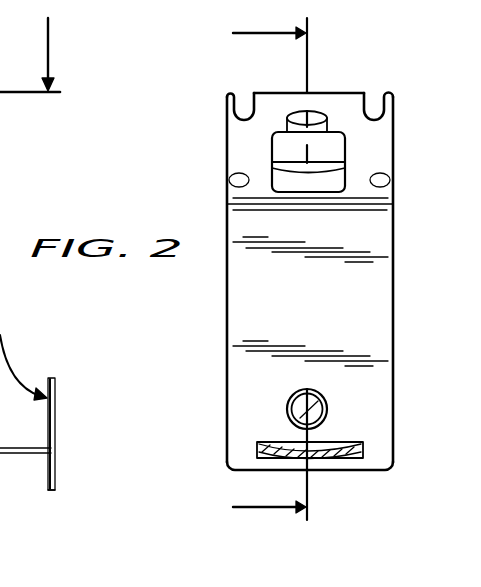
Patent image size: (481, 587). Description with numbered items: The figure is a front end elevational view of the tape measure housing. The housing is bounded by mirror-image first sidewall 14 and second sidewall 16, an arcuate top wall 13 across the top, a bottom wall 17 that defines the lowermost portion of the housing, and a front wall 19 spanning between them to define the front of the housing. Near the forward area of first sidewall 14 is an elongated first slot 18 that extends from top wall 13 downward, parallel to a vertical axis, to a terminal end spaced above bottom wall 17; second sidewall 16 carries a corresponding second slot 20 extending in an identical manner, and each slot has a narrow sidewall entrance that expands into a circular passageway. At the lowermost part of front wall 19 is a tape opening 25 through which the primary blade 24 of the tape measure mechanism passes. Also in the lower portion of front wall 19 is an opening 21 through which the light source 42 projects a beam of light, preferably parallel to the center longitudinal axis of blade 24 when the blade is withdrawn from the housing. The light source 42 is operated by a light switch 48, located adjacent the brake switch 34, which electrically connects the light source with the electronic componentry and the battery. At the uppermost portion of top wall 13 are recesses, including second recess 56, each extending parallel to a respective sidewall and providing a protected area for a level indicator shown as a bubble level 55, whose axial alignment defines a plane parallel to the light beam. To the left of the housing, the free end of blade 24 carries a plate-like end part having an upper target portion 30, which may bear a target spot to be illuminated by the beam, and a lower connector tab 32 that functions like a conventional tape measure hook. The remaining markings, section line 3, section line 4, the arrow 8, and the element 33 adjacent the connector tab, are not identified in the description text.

The section line 3 is at (30, 46).
The section line 4 is at (258, 273).
The dispenser housing 8 is at (23, 341).
The top wall 13 is at (331, 92).
The first sidewall 14 is at (227, 306).
The second sidewall 16 is at (393, 267).
The bottom wall 17 is at (381, 470).
The first slot 18 is at (240, 176).
The front wall 19 is at (351, 315).
The second slot 20 is at (390, 182).
The opening 21 is at (296, 392).
The primary blade 24 is at (279, 442).
The tape opening 25 is at (348, 440).
The upper target portion 30 is at (57, 385).
The lower connector tab 32 is at (57, 490).
The tube 33 is at (57, 448).
The brake switch 34 is at (286, 153).
The light source 42 is at (335, 416).
The light switch 48 is at (330, 118).
The bubble level 55 is at (248, 100).
The second recess 56 is at (370, 100).